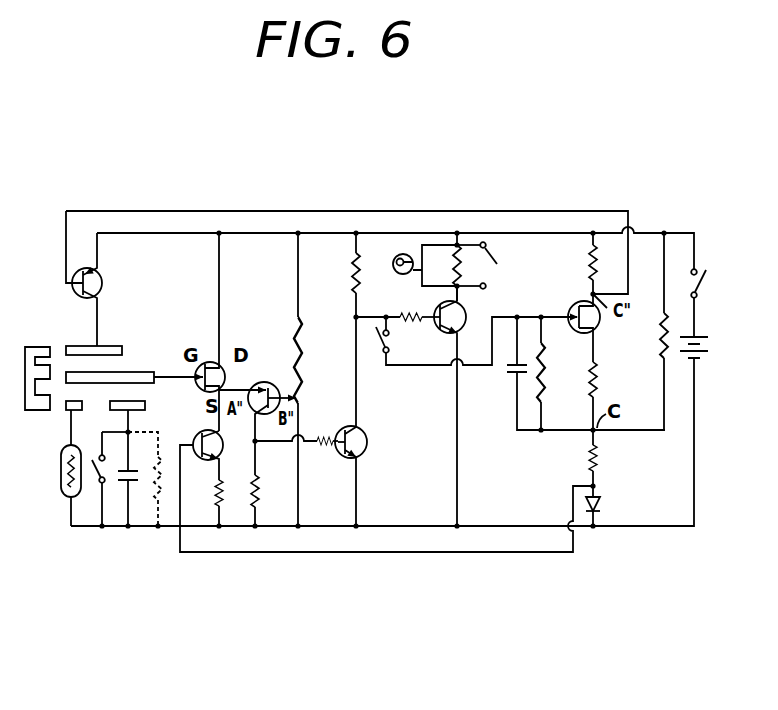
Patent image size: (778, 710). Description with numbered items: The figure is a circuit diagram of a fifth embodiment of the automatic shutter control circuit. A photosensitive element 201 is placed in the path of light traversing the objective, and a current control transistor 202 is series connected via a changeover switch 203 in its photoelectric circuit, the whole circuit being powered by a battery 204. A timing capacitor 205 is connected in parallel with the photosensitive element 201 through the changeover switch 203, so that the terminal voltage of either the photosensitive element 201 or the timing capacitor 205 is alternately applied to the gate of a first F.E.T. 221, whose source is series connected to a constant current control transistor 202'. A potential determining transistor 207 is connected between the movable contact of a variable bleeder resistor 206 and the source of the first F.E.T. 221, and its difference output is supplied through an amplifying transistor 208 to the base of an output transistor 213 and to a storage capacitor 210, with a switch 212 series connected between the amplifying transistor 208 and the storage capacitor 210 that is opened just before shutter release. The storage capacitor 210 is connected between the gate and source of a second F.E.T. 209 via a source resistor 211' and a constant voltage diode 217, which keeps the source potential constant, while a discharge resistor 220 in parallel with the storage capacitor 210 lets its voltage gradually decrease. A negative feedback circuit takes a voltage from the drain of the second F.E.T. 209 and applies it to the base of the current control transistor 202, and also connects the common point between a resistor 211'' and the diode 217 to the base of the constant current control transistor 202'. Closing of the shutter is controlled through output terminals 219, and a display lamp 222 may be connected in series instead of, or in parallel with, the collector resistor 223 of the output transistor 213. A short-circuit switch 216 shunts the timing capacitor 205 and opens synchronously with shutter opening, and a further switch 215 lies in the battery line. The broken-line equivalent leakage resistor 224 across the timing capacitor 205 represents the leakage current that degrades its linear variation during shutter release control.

The photosensitive element 201 is at (67, 498).
The current control transistor 202 is at (141, 289).
The constant current control transistor 202' is at (286, 538).
The changeover switch 203 is at (113, 375).
The battery 204 is at (684, 356).
The timing capacitor 205 is at (118, 475).
The variable bleeder resistor 206 is at (296, 345).
The potential determining transistor 207 is at (262, 382).
The amplifying transistor 208 is at (363, 437).
The second F.E.T. 209 is at (582, 304).
The storage capacitor 210 is at (512, 370).
The source resistor 211' is at (607, 381).
The resistor 211'' is at (609, 458).
The switch 212 is at (469, 342).
The output transistor 213 is at (439, 330).
The switch 215 is at (693, 283).
The short-circuit switch 216 is at (80, 446).
The constant voltage diode 217 is at (606, 506).
The output terminals 219 is at (489, 265).
The discharge resistor 220 is at (554, 373).
The first F.E.T. 221 is at (199, 391).
The display lamp 222 is at (399, 274).
The collector resistor 223 is at (462, 266).
The equivalent leakage resistor 224 is at (145, 493).